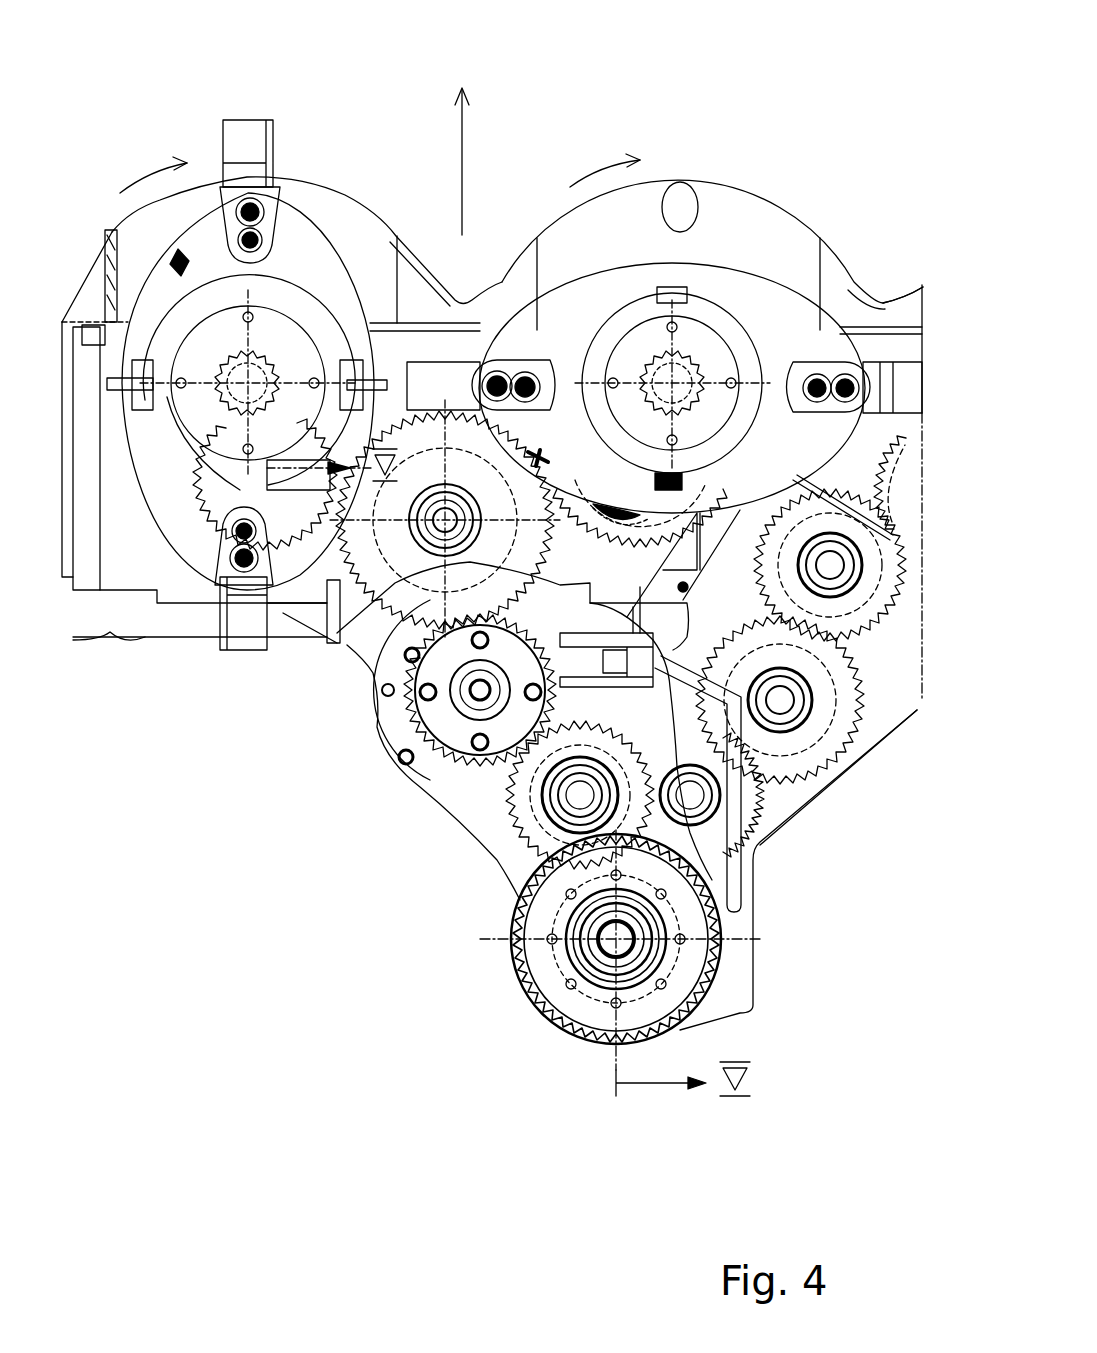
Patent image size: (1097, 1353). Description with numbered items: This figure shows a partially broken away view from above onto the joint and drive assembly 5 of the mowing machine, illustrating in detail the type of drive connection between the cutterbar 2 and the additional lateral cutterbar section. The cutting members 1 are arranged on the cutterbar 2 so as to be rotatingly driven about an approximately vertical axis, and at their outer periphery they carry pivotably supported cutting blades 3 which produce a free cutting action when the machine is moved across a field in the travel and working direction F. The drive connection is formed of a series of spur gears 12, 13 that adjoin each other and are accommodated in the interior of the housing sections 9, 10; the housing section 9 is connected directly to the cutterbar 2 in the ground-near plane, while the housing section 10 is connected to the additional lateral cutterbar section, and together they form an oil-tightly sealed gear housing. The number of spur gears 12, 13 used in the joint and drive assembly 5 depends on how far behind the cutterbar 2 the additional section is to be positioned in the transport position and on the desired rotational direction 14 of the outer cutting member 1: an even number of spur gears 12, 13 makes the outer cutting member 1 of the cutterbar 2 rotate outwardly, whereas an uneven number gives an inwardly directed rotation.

The cutting member 1 is at (342, 240).
The cutterbar 2 is at (890, 297).
The cutting blade 3 is at (247, 135).
The joint and drive assembly 5 is at (413, 863).
The housing section 9 is at (807, 772).
The housing section 10 is at (350, 647).
The spur gear 12 is at (747, 833).
The spur gear 13 is at (347, 640).
The rotational direction 14 is at (167, 163).
The travel and working direction F is at (460, 160).